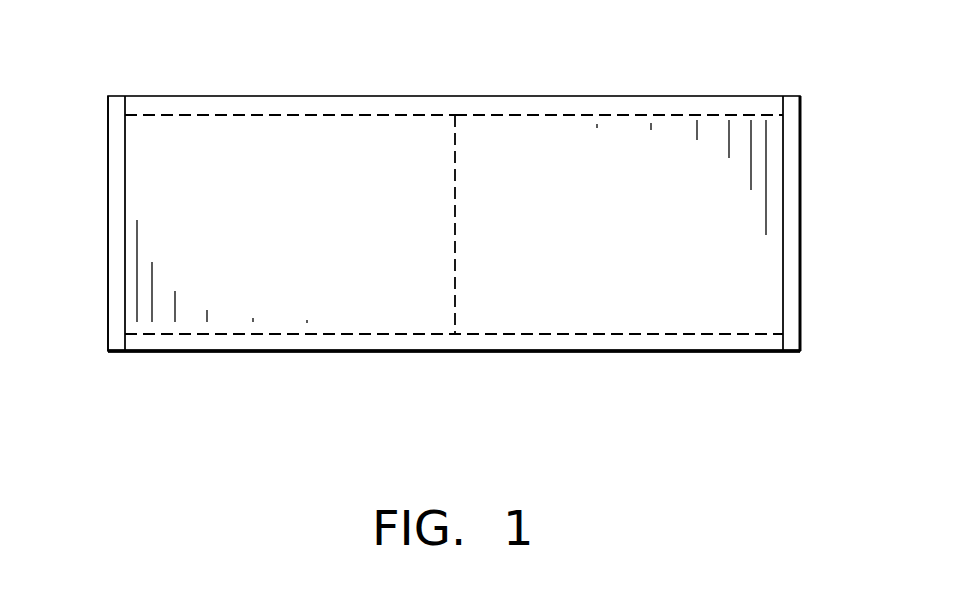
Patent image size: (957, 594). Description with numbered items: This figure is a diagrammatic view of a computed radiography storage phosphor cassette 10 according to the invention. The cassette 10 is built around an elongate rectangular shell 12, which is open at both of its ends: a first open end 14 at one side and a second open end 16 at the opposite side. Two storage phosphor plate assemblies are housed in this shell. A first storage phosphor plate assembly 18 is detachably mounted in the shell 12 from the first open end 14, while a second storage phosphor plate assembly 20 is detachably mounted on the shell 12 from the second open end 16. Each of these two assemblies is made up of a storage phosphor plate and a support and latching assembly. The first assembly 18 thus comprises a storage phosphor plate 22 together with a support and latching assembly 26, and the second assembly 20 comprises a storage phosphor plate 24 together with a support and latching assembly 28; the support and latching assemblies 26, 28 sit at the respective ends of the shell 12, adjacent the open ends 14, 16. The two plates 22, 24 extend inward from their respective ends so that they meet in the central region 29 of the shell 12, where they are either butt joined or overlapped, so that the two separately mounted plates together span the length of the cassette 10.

The storage phosphor cassette 10 is at (443, 52).
The elongate rectangular shell 12 is at (274, 353).
The first open end 14 is at (126, 202).
The second open end 16 is at (783, 306).
The first storage phosphor plate assembly 18 is at (87, 300).
The second storage phosphor plate assembly 20 is at (816, 302).
The storage phosphor plate 22 is at (268, 118).
The storage phosphor plate 24 is at (547, 118).
The support and latching assembly 26 is at (107, 143).
The support and latching assembly 28 is at (801, 139).
The central region 29 is at (421, 375).